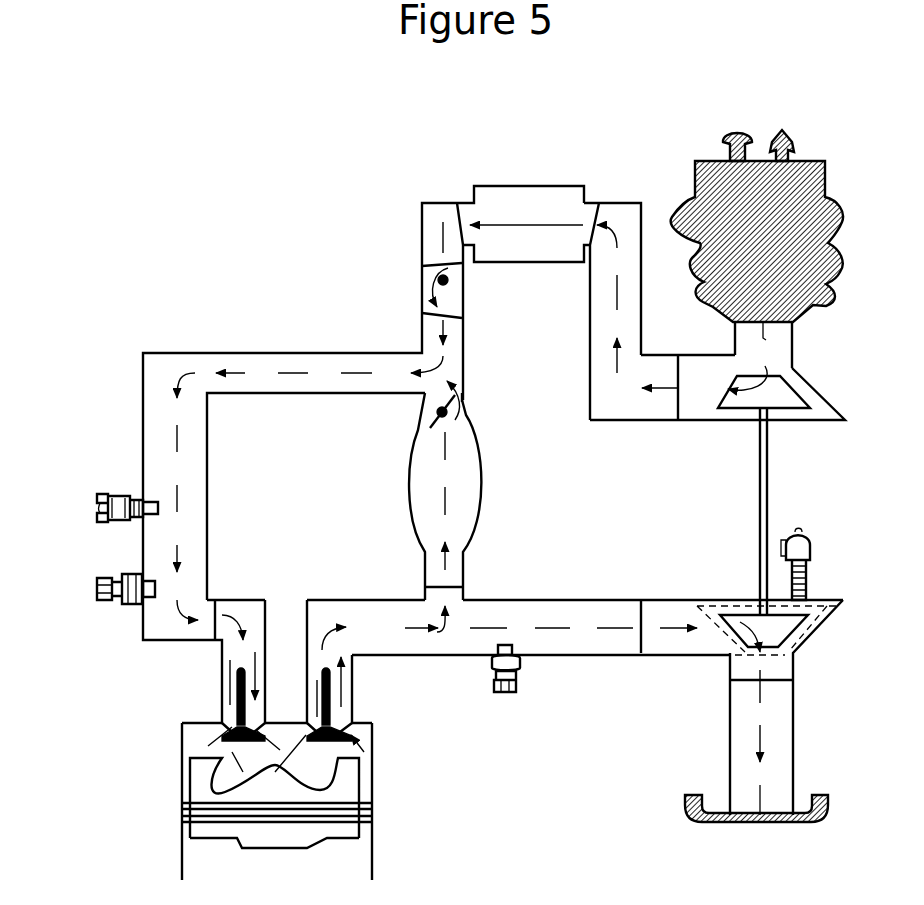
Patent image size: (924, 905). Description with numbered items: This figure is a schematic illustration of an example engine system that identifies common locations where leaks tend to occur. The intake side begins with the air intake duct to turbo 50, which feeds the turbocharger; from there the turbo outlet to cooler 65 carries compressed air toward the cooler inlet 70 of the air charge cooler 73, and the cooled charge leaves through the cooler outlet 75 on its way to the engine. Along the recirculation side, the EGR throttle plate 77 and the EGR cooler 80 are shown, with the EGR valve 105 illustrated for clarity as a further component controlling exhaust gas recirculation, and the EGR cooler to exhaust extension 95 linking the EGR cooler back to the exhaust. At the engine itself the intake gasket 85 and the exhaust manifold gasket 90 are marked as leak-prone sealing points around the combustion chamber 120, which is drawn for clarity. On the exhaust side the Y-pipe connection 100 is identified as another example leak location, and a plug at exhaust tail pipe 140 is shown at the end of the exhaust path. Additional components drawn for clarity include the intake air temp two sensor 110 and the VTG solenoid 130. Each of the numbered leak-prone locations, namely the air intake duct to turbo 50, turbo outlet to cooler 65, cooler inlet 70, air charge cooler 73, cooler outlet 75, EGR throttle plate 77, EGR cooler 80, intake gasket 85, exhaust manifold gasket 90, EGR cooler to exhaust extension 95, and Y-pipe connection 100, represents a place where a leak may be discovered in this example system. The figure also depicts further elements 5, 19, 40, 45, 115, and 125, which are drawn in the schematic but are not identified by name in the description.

The engine 5 is at (845, 222).
The exhaust outlet pipe 19 is at (800, 680).
The fuel injector 40 is at (735, 128).
The spark plug 45 is at (806, 128).
The air intake duct to turbo 50 is at (726, 317).
The turbo outlet to cooler 65 is at (678, 423).
The cooler inlet 70 is at (592, 202).
The air charge cooler 73 is at (500, 185).
The cooler outlet 75 is at (422, 265).
The EGR throttle plate 77 is at (422, 287).
The EGR cooler 80 is at (468, 397).
The intake gasket 85 is at (217, 598).
The exhaust manifold gasket 90 is at (362, 600).
The EGR cooler to exhaust extension 95 is at (472, 587).
The Y-pipe connection 100 is at (641, 598).
The EGR valve 105 is at (432, 428).
The intake air temp 2 (IAT2) 110 is at (94, 492).
The sensor 115 is at (93, 606).
The combustion chamber 120 is at (180, 756).
The exhaust sensor 125 is at (519, 695).
The VTG solenoid 130 is at (808, 540).
The plug at exhaust tail pipe 140 is at (831, 804).